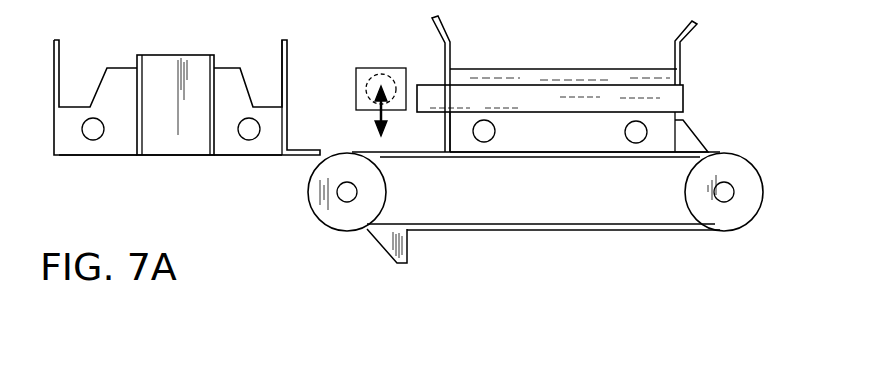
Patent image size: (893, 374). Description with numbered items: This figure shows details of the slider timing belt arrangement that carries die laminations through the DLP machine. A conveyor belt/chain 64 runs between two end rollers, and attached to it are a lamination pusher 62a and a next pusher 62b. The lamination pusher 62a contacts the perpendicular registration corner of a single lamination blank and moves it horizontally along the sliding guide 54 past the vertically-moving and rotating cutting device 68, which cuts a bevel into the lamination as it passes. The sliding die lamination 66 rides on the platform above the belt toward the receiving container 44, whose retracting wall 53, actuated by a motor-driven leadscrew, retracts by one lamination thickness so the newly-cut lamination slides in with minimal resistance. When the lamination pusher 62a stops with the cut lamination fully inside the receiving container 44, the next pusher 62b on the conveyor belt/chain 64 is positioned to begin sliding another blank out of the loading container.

The receiving container 44 is at (225, 156).
The receiving container retracting wall 53 is at (158, 56).
The sliding guide 54 is at (470, 85).
The lamination pusher 62a is at (703, 148).
The next pusher 62b is at (387, 254).
The conveyor belt/chain 64 is at (635, 232).
The sliding die lamination 66 is at (545, 68).
The cutting device 68 is at (382, 67).